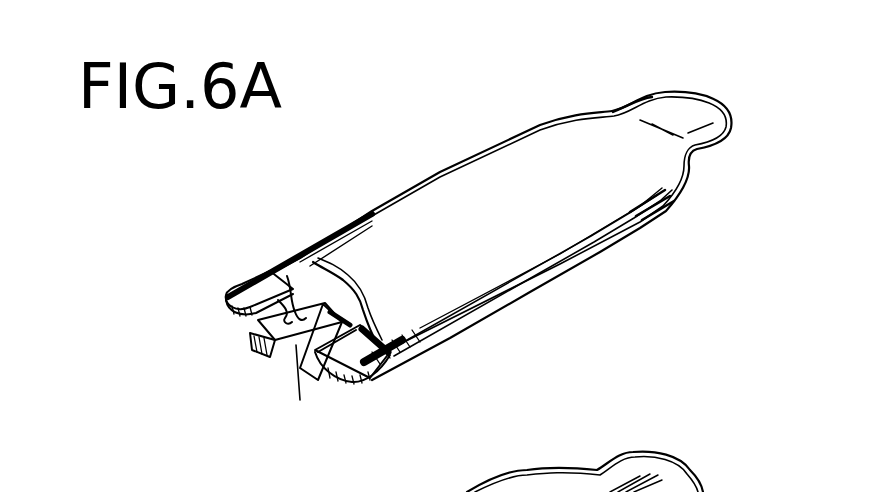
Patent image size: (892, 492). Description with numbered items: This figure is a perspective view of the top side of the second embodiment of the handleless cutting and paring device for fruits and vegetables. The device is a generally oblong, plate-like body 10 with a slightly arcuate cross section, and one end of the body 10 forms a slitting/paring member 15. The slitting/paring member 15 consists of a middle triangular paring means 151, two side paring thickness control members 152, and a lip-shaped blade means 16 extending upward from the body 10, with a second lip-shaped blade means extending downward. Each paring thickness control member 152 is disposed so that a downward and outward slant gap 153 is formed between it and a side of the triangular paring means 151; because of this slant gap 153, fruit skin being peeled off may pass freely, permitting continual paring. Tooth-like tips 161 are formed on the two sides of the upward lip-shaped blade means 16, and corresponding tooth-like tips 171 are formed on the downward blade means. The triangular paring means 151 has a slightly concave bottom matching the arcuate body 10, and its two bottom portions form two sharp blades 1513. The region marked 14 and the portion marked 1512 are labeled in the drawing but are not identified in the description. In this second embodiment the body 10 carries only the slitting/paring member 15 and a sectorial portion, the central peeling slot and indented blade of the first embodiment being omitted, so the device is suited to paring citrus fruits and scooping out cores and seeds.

The body 10 is at (585, 270).
The main body plate 14 is at (510, 269).
The slitting/paring member 15 is at (268, 321).
The lip-shaped blade means 16 is at (315, 262).
The triangular paring means 151 is at (253, 342).
The paring thickness control member 152 is at (232, 287).
The slant gap 153 is at (257, 318).
The tooth-like tip 161 is at (362, 308).
The tooth-like tip 171 is at (295, 370).
The bent portion 1512 is at (290, 365).
The sharp blade 1513 is at (322, 372).